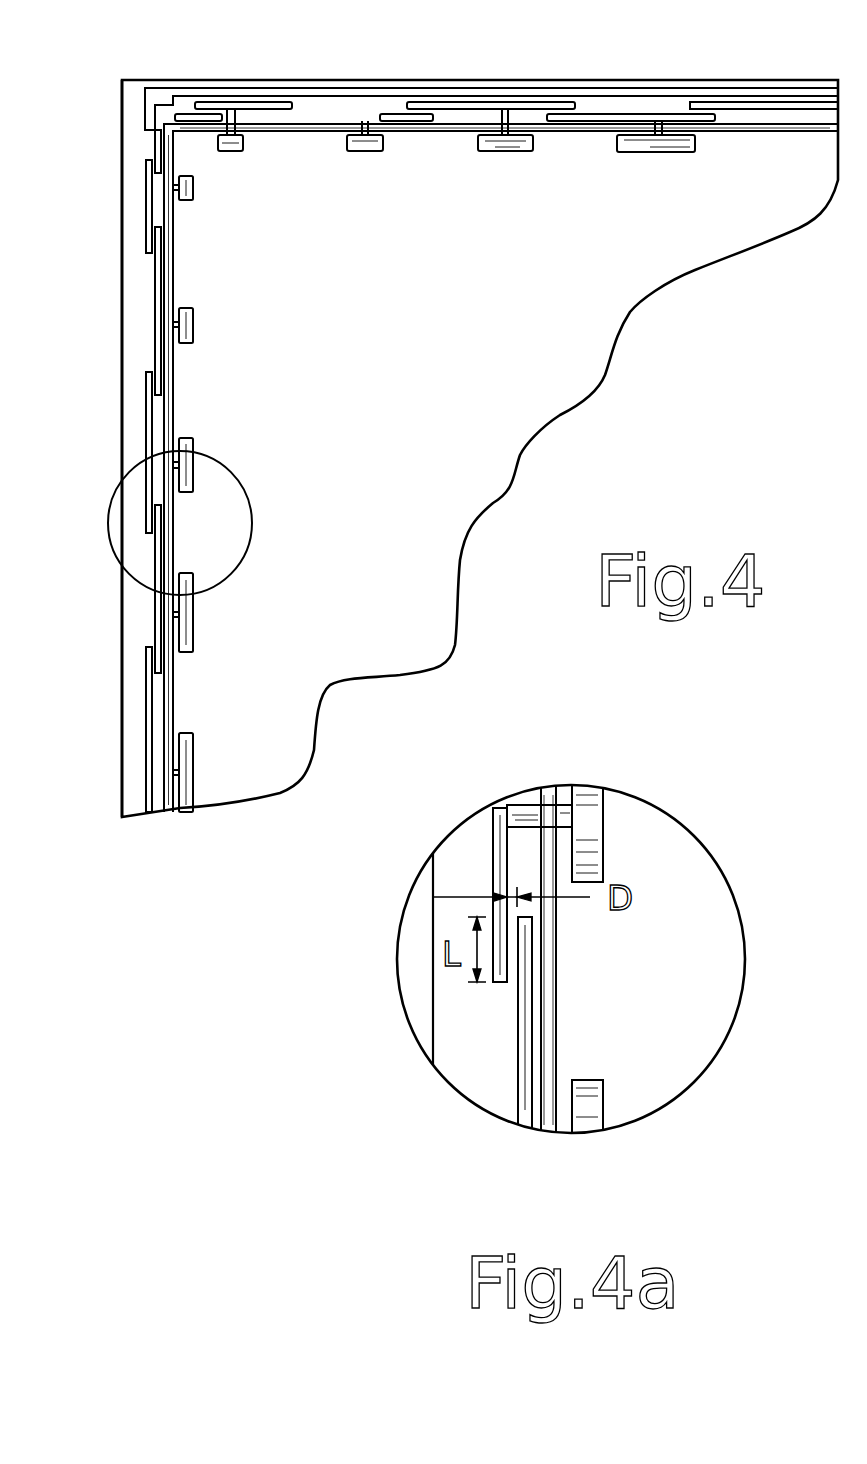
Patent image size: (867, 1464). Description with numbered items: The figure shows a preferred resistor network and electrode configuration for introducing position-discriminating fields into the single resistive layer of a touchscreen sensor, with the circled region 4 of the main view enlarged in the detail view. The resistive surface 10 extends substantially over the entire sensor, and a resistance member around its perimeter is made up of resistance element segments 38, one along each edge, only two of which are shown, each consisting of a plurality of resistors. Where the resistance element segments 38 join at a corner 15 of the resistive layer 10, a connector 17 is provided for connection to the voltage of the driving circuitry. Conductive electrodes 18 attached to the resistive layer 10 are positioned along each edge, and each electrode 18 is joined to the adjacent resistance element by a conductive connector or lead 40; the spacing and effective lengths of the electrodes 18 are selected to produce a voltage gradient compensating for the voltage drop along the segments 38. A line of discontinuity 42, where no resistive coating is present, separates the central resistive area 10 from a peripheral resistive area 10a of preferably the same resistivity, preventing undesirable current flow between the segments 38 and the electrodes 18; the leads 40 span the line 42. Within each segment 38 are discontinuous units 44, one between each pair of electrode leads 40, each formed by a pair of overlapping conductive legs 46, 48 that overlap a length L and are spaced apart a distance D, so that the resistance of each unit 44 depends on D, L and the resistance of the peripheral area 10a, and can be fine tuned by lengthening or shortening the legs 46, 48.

In FIG. 4, the detail circle / enlarged region 4 is at (112, 548).
In FIG. 4A, the detail circle / enlarged region 4 is at (688, 830).
In FIG. 4, the resistive surface 10 is at (403, 403).
In FIG. 4A, the resistive surface 10 is at (651, 972).
In FIG. 4, the peripheral resistive area 10a is at (134, 774).
In FIG. 4A, the peripheral resistive area 10a is at (447, 917).
In FIG. 4, the corner 15 is at (145, 117).
In FIG. 4, the connector 17 is at (268, 97).
In FIG. 4, the conductive electrode 18 is at (477, 145).
In FIG. 4A, the conductive electrode 18 is at (588, 796).
In FIG. 4, the resistance element segment 38 is at (606, 86).
In FIG. 4, the conductive connector or lead 40 is at (162, 190).
In FIG. 4A, the conductive connector or lead 40 is at (533, 812).
In FIG. 4, the line of discontinuity 42 is at (162, 286).
In FIG. 4A, the line of discontinuity 42 is at (548, 1092).
In FIG. 4, the discontinuous unit 44 is at (134, 664).
In FIG. 4, the conductive leg 46 is at (147, 483).
In FIG. 4A, the conductive leg 46 is at (492, 847).
In FIG. 4, the conductive leg 48 is at (160, 614).
In FIG. 4A, the conductive leg 48 is at (522, 1043).